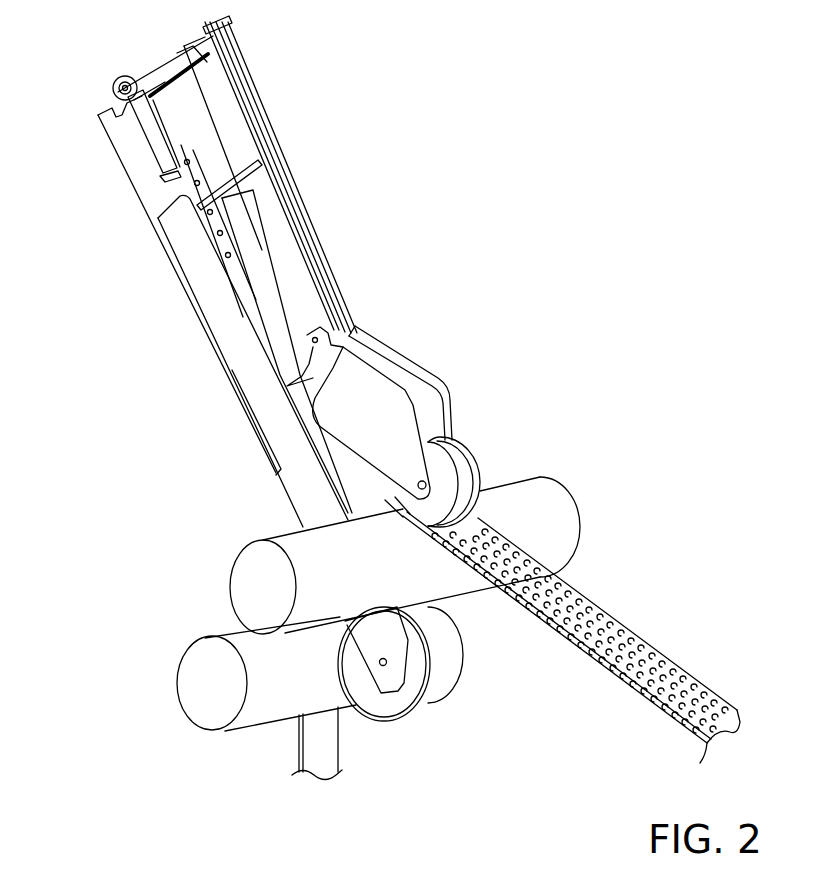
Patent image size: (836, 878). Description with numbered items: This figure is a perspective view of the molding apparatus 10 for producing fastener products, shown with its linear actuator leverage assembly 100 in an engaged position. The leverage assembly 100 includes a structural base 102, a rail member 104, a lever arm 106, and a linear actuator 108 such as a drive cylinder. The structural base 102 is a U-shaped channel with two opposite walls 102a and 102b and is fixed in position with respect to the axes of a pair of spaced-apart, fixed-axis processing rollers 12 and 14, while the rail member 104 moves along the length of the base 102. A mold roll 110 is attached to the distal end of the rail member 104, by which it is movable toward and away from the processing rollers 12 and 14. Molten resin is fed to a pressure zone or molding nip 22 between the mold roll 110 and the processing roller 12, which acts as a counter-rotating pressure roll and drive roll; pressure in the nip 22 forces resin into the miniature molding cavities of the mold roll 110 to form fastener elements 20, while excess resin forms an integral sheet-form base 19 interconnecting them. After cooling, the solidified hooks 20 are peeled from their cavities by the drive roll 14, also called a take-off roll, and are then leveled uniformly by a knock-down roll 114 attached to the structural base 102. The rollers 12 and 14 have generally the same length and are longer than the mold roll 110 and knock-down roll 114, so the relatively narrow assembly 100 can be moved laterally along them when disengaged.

The molding apparatus 10 is at (465, 40).
The processing roller 12 is at (195, 695).
The processing roller 14 is at (243, 577).
The base 19 is at (590, 602).
The fastener elements 20 is at (582, 627).
The molding nip 22 is at (348, 707).
The linear actuator leverage assembly 100 is at (243, 38).
The structural base 102 is at (143, 172).
The wall 102a is at (143, 208).
The wall 102b is at (203, 170).
The rail member 104 is at (303, 488).
The lever arm 106 is at (178, 70).
The linear actuator 108 is at (240, 232).
The mold roll 110 is at (387, 702).
The knock-down roll 114 is at (460, 458).